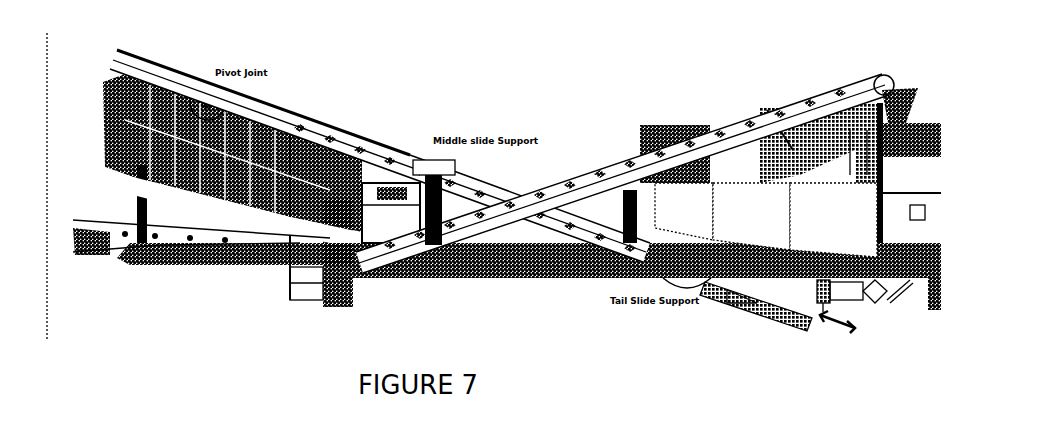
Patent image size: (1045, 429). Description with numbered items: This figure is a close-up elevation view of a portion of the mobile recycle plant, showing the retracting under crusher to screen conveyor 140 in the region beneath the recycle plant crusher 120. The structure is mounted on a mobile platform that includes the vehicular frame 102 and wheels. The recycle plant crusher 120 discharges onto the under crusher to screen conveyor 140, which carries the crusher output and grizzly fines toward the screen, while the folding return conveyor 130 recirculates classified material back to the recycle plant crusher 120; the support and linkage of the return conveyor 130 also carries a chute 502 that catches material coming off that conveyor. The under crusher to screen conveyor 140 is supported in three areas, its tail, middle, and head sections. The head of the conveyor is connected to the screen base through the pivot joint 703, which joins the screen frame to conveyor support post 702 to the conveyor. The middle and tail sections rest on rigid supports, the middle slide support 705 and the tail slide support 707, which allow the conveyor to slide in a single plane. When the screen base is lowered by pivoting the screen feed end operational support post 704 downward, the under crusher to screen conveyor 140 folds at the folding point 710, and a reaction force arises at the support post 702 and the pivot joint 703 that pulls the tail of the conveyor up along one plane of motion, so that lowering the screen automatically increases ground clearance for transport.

The vehicular frame 102 is at (529, 206).
The recycle plant crusher 120 is at (766, 200).
The return conveyor 130 is at (743, 118).
The under crusher to screen conveyor 140 is at (348, 134).
The chute 502 is at (900, 90).
The screen frame to conveyor support post 702 is at (213, 133).
The pivot joint 703 is at (242, 94).
The screen feed end operational support post 704 is at (135, 193).
The middle rigid support 705 is at (447, 163).
The tail rigid support 707 is at (682, 282).
The under crusher to screen conveyor folding point 710 is at (397, 140).